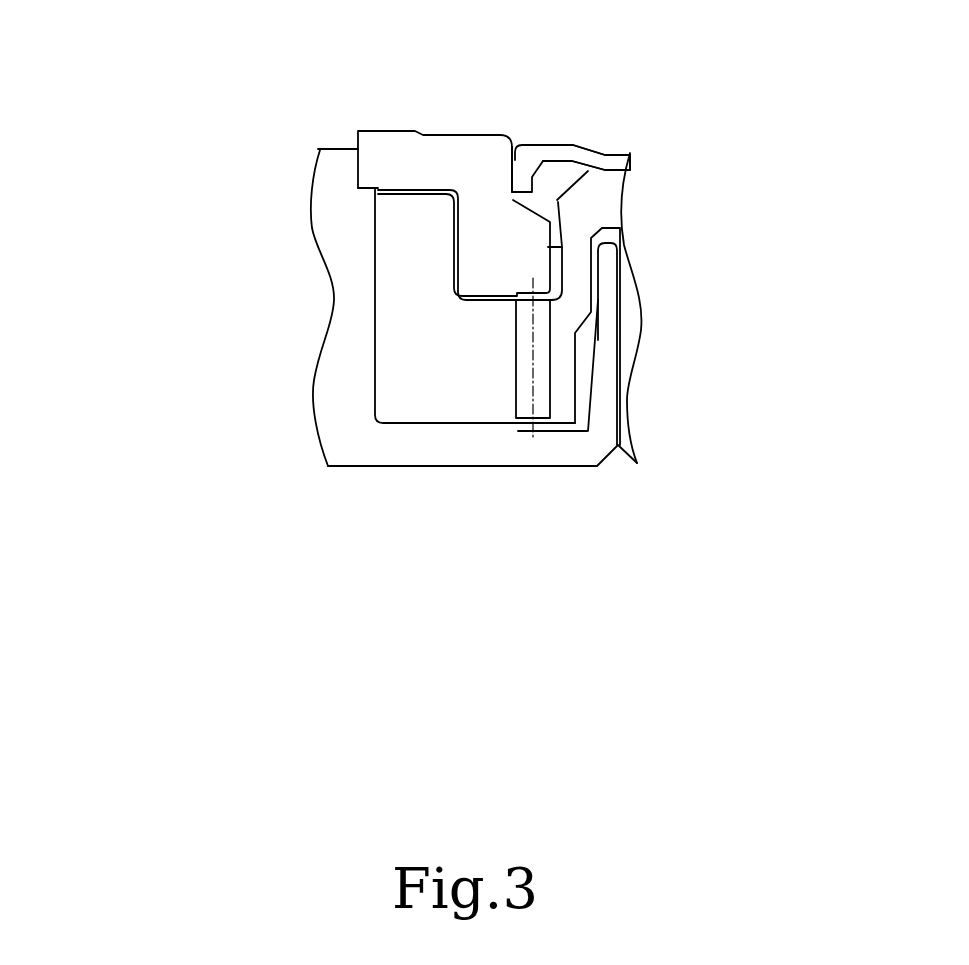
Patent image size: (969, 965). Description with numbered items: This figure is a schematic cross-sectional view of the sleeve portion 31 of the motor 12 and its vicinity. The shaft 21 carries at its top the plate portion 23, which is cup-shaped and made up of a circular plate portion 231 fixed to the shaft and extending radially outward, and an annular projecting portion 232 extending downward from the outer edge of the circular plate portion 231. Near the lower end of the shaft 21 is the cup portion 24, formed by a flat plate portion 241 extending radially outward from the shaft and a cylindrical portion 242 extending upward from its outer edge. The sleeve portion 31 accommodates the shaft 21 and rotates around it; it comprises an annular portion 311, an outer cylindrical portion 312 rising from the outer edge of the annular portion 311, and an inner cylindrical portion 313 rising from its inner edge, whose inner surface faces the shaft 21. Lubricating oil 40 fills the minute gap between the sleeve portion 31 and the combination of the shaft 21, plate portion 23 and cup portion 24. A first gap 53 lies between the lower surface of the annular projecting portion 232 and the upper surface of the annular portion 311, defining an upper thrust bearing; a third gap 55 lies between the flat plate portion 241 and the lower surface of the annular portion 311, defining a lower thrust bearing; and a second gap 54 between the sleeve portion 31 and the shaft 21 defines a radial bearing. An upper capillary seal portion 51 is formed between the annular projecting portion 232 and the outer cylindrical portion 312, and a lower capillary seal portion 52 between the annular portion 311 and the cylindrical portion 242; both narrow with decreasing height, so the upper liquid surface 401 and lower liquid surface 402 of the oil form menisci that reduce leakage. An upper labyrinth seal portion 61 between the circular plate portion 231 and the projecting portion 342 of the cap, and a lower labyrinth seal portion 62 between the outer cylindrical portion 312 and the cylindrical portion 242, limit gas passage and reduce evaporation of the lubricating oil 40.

The motor 12 is at (92, 64).
The shaft 21 is at (347, 395).
The plate portion 23 is at (340, 53).
The cup portion 24 is at (765, 430).
The sleeve portion 31 is at (420, 245).
The lubricating oil 40 is at (383, 191).
The upper capillary seal portion 51 is at (590, 171).
The lower capillary seal portion 52 is at (590, 345).
The first gap 53 is at (519, 304).
The second gap 54 is at (375, 283).
The third gap 55 is at (554, 434).
The upper labyrinth seal portion 61 is at (512, 165).
The lower labyrinth seal portion 62 is at (600, 291).
The circular plate portion 231 is at (417, 163).
The annular projecting portion 232 is at (493, 247).
The flat plate portion 241 is at (398, 447).
The cylindrical portion 242 is at (602, 427).
The annular portion 311 is at (440, 395).
The outer cylindrical portion 312 is at (575, 272).
The inner cylindrical portion 313 is at (415, 342).
The projecting portion 342 is at (525, 178).
The upper liquid surface 401 is at (556, 219).
The lower liquid surface 402 is at (582, 394).